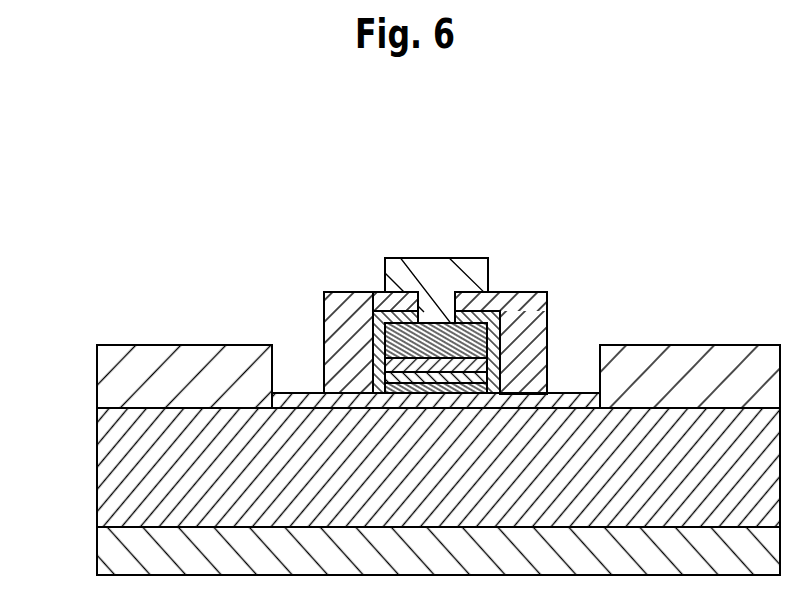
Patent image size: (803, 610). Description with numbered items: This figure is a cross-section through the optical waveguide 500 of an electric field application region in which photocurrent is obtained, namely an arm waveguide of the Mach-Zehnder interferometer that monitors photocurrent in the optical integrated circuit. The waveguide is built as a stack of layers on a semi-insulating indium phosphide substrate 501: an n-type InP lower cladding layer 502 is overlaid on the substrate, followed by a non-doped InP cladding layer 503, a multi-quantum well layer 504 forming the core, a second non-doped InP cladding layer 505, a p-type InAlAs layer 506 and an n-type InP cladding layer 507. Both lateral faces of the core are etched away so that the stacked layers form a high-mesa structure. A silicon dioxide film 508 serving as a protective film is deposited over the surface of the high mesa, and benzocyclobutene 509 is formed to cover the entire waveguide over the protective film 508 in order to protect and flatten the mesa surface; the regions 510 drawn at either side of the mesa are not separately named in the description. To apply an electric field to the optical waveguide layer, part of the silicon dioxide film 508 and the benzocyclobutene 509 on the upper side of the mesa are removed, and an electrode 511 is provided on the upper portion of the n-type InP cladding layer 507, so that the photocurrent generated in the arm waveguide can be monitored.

The memory device 500 is at (441, 148).
The semi-insulating InP substrate 501 is at (108, 552).
The n-type InP lower cladding layer 502 is at (108, 478).
The non-doped InP cladding layer 503 is at (383, 403).
The multi-quantum well layer 504 is at (382, 392).
The non-doped InP cladding layer 505 is at (489, 380).
The p-type InAlAs layer 506 is at (489, 350).
The n-type InP cladding layer 507 is at (462, 302).
The SiO2 film 508 is at (383, 310).
The benzocyclobutene (BCB) 509 is at (340, 297).
The dielectric layer 510 is at (108, 377).
The electrode 511 is at (437, 272).